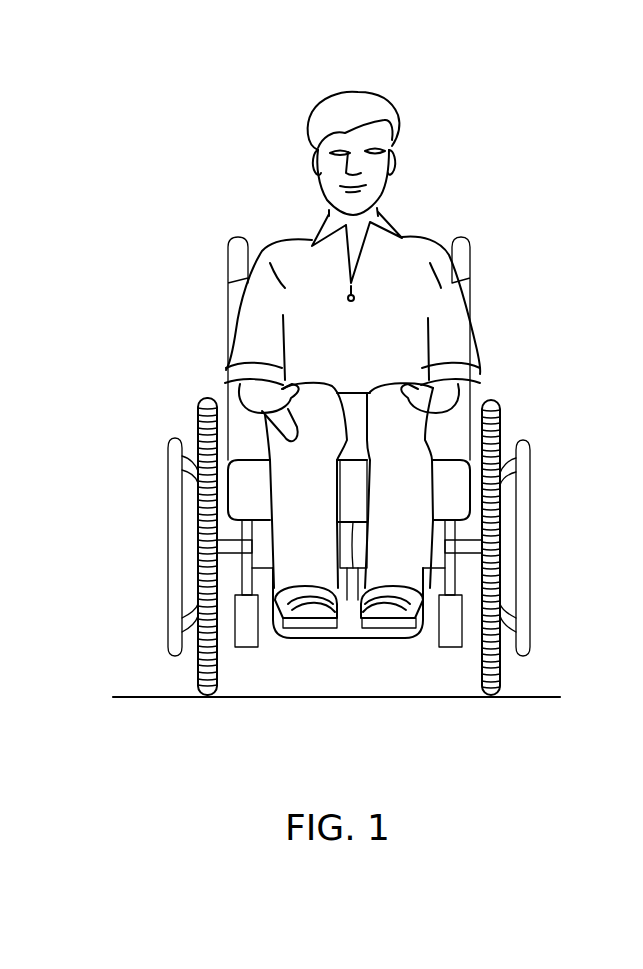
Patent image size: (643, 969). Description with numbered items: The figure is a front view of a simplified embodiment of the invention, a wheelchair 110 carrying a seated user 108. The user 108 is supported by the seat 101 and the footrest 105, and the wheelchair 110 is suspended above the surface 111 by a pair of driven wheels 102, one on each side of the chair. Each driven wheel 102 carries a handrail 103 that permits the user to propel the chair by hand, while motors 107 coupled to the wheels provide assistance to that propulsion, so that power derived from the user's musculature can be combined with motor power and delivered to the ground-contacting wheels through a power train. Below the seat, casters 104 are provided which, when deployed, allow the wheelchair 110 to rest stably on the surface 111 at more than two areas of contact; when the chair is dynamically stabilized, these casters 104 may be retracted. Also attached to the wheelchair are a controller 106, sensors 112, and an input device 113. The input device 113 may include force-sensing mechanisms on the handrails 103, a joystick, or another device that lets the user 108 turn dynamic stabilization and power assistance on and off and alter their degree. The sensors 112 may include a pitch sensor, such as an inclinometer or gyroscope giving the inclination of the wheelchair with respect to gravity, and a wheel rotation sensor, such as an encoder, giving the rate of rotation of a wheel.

The seat 101 is at (470, 298).
The driven wheels 102 is at (196, 423).
The handrails 103 is at (168, 455).
The casters 104 is at (248, 648).
The footrest 105 is at (317, 640).
The controller 106 is at (348, 570).
The motors 107 is at (228, 553).
The user 108 is at (395, 121).
The wheelchair 110 is at (189, 142).
The surface 111 is at (567, 693).
The sensors 112 is at (358, 570).
The input device 113 is at (290, 446).